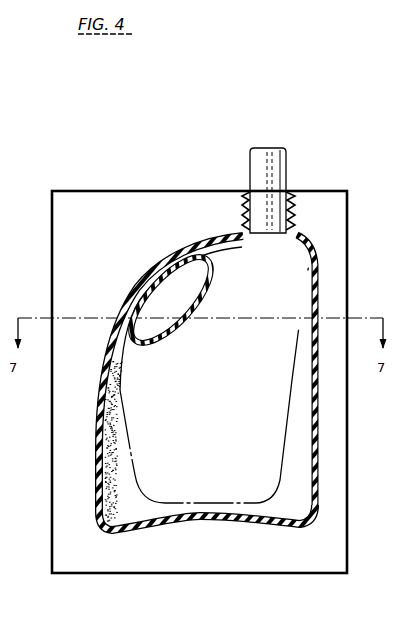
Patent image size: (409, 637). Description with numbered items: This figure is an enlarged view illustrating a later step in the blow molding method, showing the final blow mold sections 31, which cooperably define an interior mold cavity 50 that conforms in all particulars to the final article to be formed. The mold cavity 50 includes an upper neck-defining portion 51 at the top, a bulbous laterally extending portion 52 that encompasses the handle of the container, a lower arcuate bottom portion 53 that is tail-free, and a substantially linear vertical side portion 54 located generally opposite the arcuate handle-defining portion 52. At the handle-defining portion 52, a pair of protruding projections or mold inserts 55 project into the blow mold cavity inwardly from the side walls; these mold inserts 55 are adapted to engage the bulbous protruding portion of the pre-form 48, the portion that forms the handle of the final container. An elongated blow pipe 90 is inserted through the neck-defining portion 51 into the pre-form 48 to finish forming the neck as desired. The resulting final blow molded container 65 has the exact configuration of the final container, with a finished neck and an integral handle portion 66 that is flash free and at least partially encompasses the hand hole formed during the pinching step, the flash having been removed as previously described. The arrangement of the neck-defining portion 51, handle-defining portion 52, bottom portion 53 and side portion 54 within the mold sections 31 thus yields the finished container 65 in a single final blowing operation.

The final blow mold sections 31 is at (101, 187).
The blow pipe 90 is at (283, 150).
The upper neck-defining portion 51 is at (298, 211).
The bulbous laterally extending portion 52 is at (215, 238).
The integral handle portion 66 is at (142, 276).
The mold inserts 55 is at (190, 291).
The pre-form 48 is at (184, 445).
The lower arcuate bottom portion 53 is at (201, 514).
The substantially linear vertical side portion 54 is at (306, 406).
The interior mold cavity 50 is at (296, 449).
The final blow molded container 65 is at (322, 500).